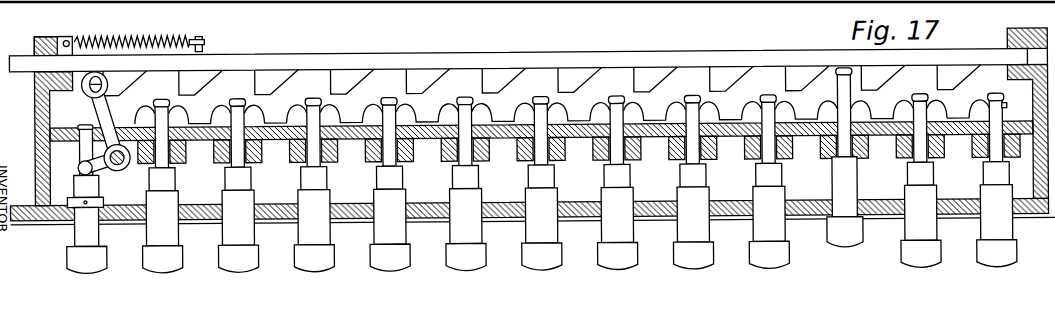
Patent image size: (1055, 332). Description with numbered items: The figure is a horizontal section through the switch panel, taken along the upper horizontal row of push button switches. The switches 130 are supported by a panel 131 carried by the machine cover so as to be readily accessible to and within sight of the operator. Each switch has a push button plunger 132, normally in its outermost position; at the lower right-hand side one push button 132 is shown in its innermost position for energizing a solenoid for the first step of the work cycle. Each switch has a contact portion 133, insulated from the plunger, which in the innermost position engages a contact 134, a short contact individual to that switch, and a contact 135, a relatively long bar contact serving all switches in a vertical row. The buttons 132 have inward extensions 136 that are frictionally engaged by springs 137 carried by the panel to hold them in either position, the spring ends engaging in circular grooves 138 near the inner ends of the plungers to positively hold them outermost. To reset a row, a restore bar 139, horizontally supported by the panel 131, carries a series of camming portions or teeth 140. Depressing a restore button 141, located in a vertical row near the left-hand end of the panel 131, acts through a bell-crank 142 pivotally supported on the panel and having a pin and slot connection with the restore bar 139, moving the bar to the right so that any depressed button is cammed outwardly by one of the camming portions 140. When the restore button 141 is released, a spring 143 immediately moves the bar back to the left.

The switches 130 is at (677, 163).
The panel 131 is at (362, 216).
The push button plunger 132 is at (830, 231).
The contact portion 133 is at (849, 152).
The contact 134 is at (866, 159).
The contact 135 is at (822, 159).
The inward extensions 136 is at (851, 105).
The springs 137 is at (942, 121).
The circular grooves 138 is at (1012, 115).
The restore bar 139 is at (432, 55).
The camming portions 140 is at (728, 87).
The restore button 141 is at (72, 253).
The bell-crank 142 is at (117, 115).
The spring 143 is at (127, 34).